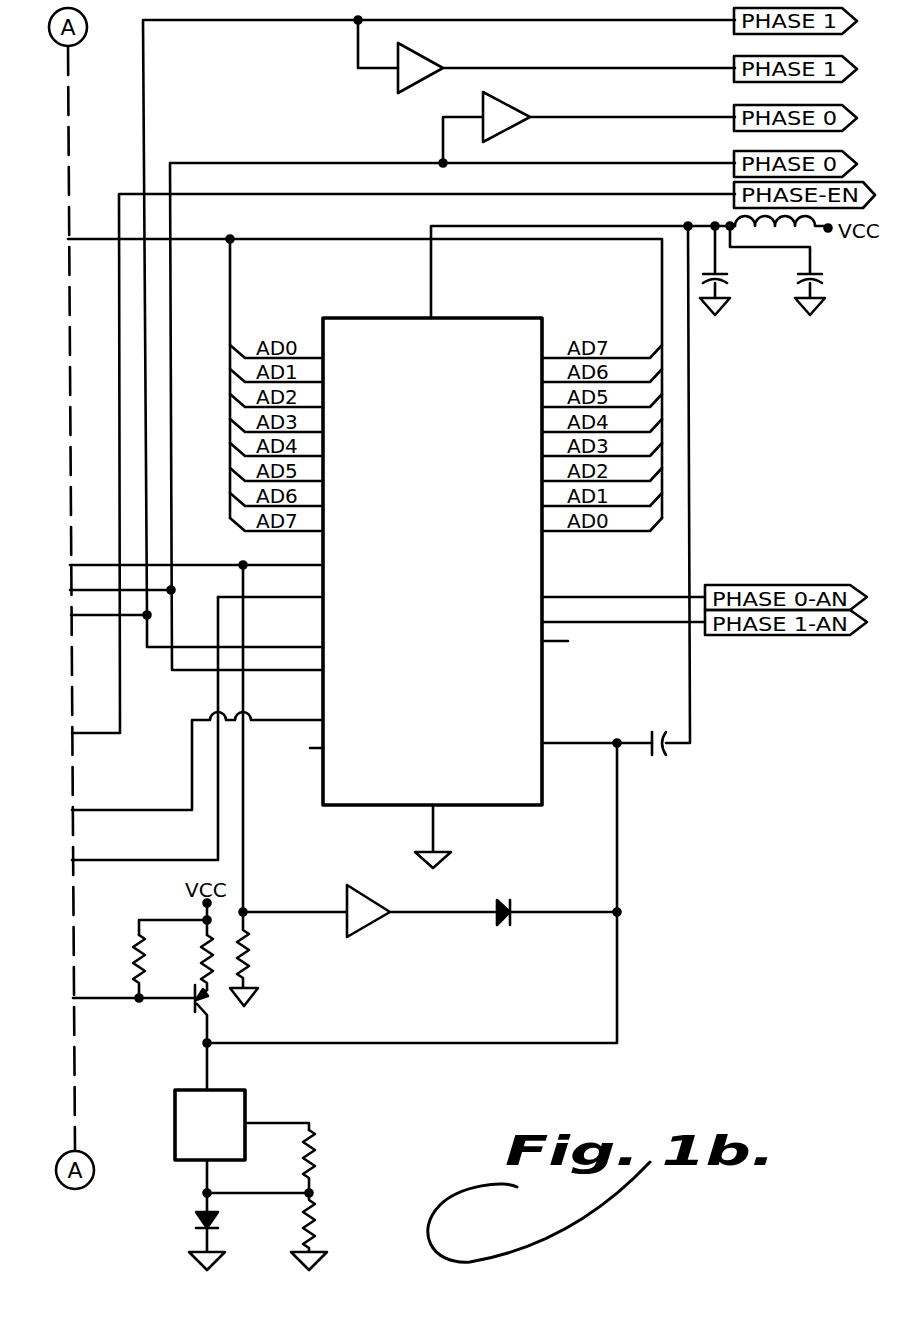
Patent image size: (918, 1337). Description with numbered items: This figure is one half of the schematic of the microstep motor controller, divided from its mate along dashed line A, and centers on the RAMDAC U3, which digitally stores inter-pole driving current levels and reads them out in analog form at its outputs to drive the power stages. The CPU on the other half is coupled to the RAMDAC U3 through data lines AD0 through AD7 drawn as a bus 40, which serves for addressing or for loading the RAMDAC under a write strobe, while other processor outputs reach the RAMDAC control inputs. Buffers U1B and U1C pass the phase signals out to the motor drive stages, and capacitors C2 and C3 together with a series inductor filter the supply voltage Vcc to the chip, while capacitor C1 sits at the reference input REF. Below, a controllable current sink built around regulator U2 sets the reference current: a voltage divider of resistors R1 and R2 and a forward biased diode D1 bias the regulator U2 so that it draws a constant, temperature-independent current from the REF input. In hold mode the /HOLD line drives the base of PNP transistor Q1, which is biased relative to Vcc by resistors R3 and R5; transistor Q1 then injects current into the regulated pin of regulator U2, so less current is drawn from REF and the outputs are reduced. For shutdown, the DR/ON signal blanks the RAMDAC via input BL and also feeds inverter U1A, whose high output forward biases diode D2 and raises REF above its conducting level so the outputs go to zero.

The bus 40 is at (79, 240).
The RAMDAC U3 is at (406, 524).
The regulator U2 is at (226, 1146).
The inverter U1A is at (370, 906).
The buffer amplifier B U1B is at (589, 122).
The buffer amplifier C U1C is at (566, 63).
The reference capacitor C1 is at (658, 729).
The filter capacitor C2 is at (737, 270).
The filter capacitor C3 is at (797, 270).
The resistor R1 is at (328, 1161).
The resistor R2 is at (322, 1230).
The resistor R3 is at (189, 959).
The resistor R5 is at (205, 959).
The diode D1 is at (190, 1240).
The diode D2 is at (552, 900).
The PNP transistor Q1 is at (218, 1014).